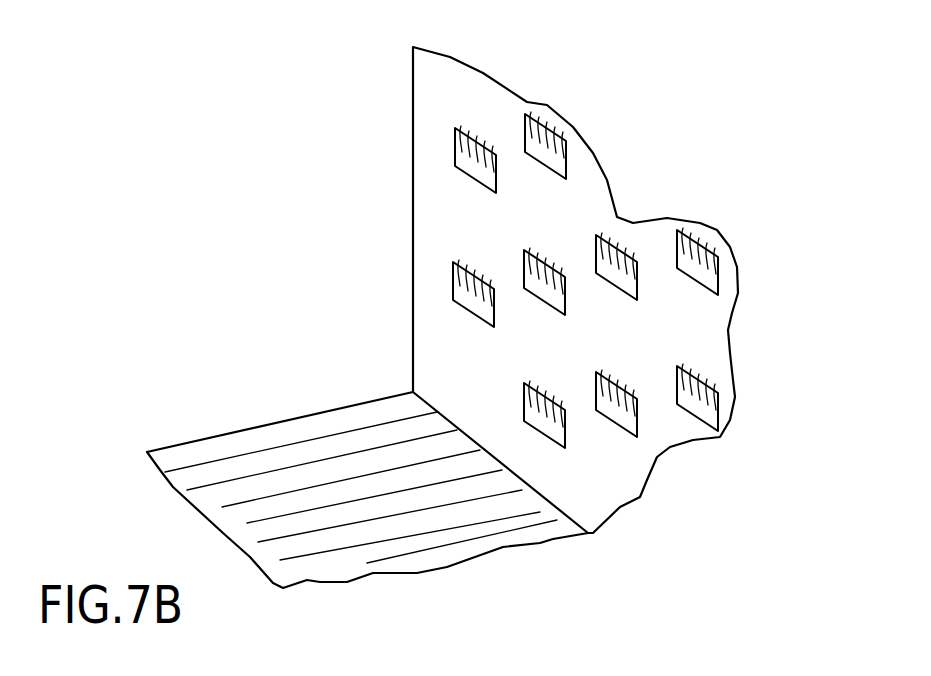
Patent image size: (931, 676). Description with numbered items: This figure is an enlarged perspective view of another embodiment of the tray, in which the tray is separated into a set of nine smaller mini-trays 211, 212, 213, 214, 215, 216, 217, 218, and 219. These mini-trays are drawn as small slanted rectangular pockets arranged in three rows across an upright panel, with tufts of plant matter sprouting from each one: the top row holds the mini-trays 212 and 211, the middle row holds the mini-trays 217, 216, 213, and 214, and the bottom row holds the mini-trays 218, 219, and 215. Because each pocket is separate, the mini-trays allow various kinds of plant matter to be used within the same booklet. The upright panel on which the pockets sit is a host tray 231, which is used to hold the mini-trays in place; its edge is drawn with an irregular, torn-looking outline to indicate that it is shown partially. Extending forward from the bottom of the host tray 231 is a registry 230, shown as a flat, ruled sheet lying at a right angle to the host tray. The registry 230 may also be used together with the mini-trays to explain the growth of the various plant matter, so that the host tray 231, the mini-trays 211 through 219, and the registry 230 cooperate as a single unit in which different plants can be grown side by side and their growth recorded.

The mini-tray 211 is at (562, 148).
The mini-tray 212 is at (453, 143).
The mini-tray 213 is at (637, 260).
The mini-tray 214 is at (715, 280).
The mini-tray 215 is at (707, 418).
The mini-tray 216 is at (525, 265).
The mini-tray 217 is at (453, 295).
The mini-tray 218 is at (525, 416).
The mini-tray 219 is at (617, 420).
The registry 230 is at (285, 443).
The host tray 231 is at (700, 343).